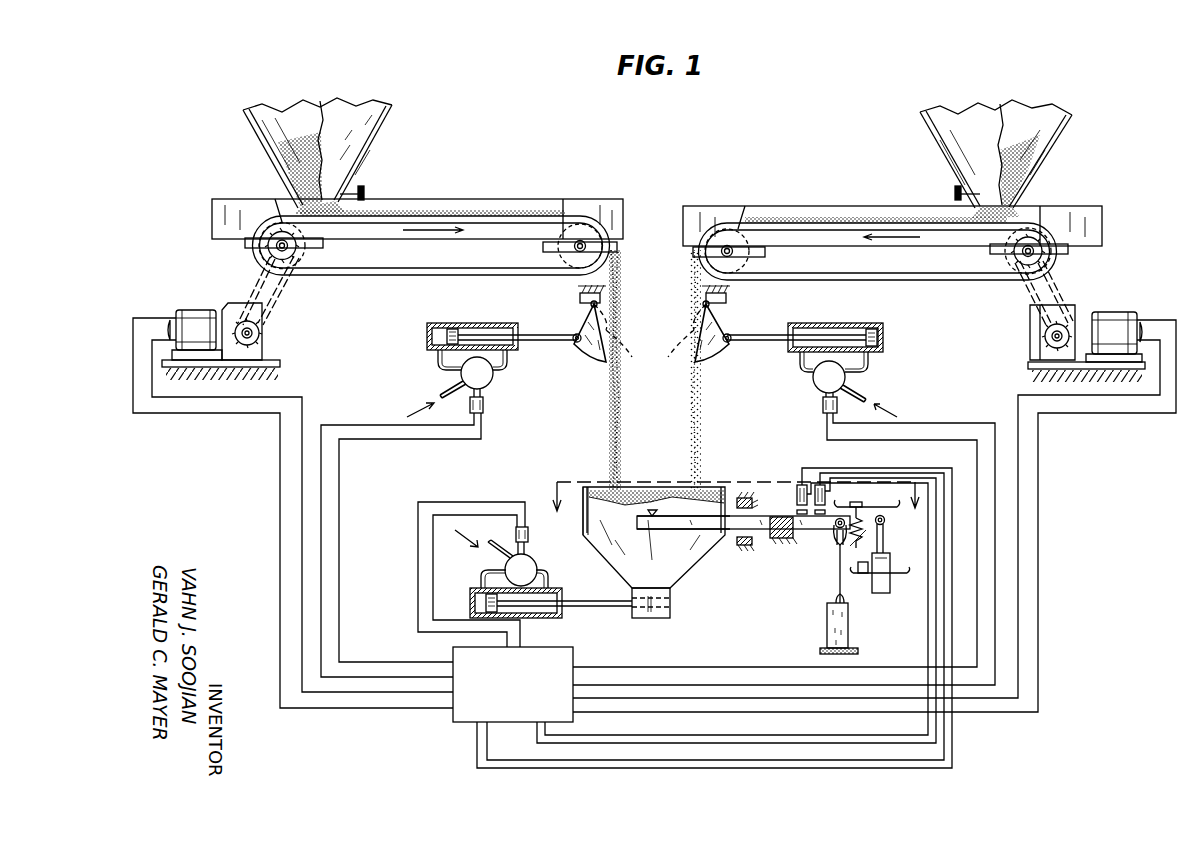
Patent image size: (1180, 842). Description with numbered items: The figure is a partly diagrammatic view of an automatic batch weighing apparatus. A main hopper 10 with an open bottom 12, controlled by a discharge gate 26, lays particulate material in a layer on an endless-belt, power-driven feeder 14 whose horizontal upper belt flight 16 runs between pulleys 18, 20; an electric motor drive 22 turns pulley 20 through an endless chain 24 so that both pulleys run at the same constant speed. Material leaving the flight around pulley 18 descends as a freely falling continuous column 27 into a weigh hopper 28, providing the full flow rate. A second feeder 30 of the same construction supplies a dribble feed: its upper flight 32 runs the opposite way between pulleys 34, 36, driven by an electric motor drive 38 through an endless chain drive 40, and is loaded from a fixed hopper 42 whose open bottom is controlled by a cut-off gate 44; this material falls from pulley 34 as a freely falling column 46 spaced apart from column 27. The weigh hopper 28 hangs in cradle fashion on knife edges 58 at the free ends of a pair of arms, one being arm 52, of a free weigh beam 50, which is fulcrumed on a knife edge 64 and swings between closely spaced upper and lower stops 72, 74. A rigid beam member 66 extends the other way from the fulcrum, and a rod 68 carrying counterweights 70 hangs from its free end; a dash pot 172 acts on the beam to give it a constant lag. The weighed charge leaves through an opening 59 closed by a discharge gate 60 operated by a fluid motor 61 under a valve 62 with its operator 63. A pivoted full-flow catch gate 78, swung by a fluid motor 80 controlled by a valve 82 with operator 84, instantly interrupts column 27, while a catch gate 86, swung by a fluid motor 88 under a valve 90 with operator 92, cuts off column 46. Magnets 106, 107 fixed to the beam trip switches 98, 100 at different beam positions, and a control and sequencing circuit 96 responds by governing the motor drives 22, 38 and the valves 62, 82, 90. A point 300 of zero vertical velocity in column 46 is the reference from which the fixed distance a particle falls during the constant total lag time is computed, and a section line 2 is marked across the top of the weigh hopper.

The main hopper 10 is at (385, 132).
The open bottom 12 is at (358, 212).
The power driven feeder 14 is at (466, 208).
The upper belt flight 16 is at (400, 216).
The pulley 18 is at (562, 253).
The pulley 20 is at (300, 250).
The electric motor drive 22 is at (190, 308).
The endless chain 24 is at (288, 290).
The discharge gate 26 is at (366, 186).
The freely falling continuous column 27 is at (623, 407).
The weigh hopper 28 is at (676, 562).
The feeder 30 is at (826, 211).
The upper flight 32 is at (858, 217).
The pulley 34 is at (742, 258).
The pulley 36 is at (1042, 260).
The electric motor drive 38 is at (1122, 312).
The endless chain drive 40 is at (1045, 172).
The fixed hopper 42 is at (1040, 208).
The cut-off gate 44 is at (952, 192).
The freely falling column 46 is at (702, 405).
The free weigh beam 50 is at (758, 540).
The arm 52 is at (678, 530).
The knife edges 58 is at (652, 519).
The opening 59 is at (640, 619).
The discharge gate 60 is at (664, 619).
The fluid motor 61 is at (545, 619).
The valve 62 is at (535, 566).
The operator 63 is at (515, 532).
The knife edge 64 is at (781, 509).
The rigid beam member 66 is at (838, 565).
The rod 68 is at (845, 597).
The counterweights 70 is at (849, 630).
The upper stop 72 is at (735, 502).
The lower stop 74 is at (740, 546).
The full flow catch gate 78 is at (590, 355).
The fluid motor 80 is at (500, 323).
The valve 82 is at (492, 381).
The operator 84 is at (486, 408).
The catch gate 86 is at (728, 326).
The fluid motor 88 is at (870, 323).
The valve 90 is at (815, 380).
The operator 92 is at (822, 407).
The control and sequencing circuit 96 is at (465, 722).
The switch 98 is at (796, 496).
The switch 100 is at (826, 494).
The permanent magnet 106 is at (784, 538).
The permanent magnet 107 is at (838, 530).
The dash pot 172 is at (891, 556).
The point 300 is at (712, 250).
The section line 2- 2 is at (735, 507).